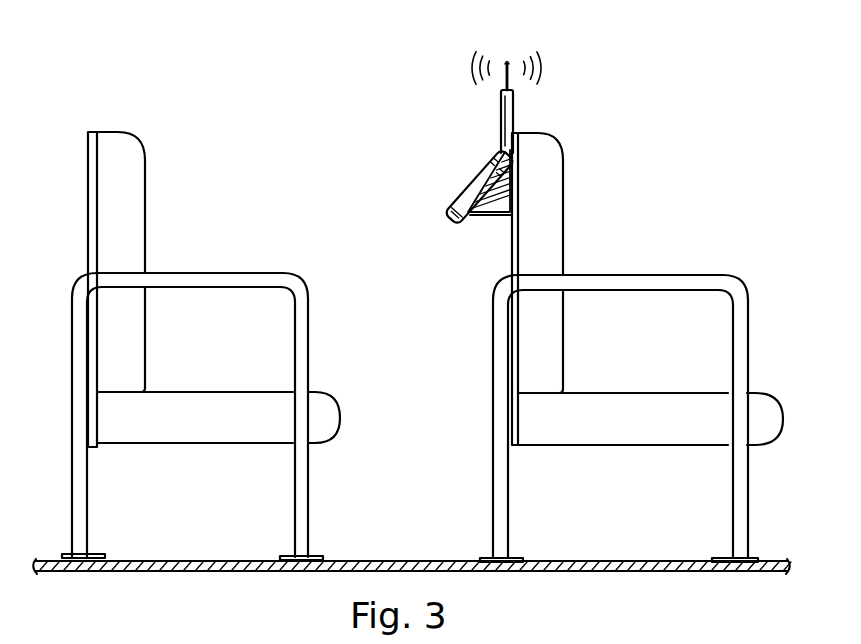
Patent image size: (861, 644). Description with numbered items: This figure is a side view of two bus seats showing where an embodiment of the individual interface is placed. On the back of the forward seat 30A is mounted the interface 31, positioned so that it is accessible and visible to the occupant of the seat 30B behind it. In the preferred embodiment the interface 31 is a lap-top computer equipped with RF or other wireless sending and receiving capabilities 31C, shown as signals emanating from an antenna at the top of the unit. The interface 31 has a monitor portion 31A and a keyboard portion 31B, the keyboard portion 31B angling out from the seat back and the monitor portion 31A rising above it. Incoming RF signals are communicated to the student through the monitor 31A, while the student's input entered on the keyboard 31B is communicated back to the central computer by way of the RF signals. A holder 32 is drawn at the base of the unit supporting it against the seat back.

The seat 30A is at (642, 138).
The seat 30B is at (162, 152).
The interface 31 is at (435, 80).
The monitor portion 31A is at (503, 127).
The keyboard portion 31B is at (458, 193).
The RF sending and receiving capabilities 31C is at (517, 50).
The holder bracket 32 is at (490, 215).